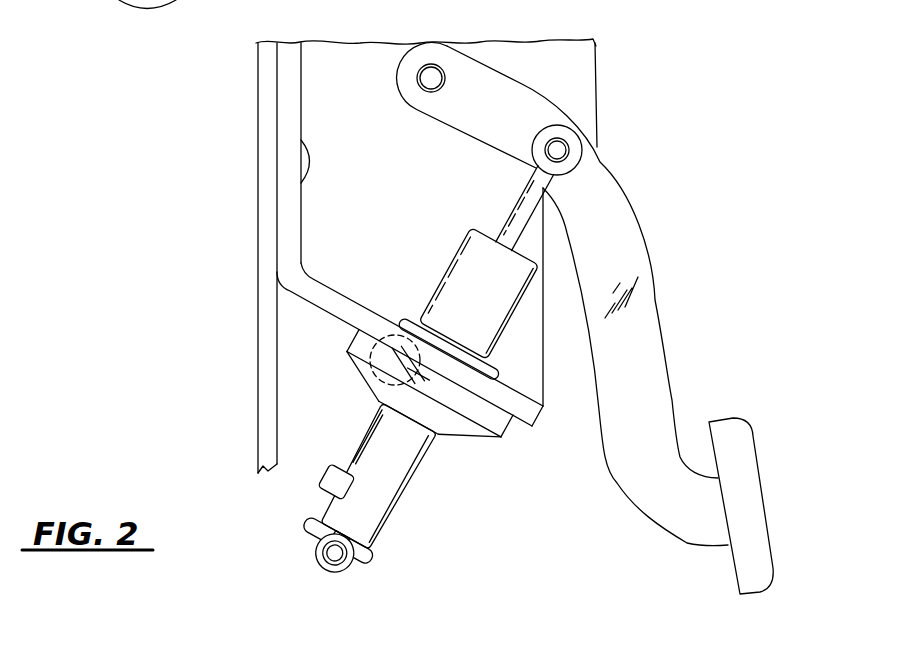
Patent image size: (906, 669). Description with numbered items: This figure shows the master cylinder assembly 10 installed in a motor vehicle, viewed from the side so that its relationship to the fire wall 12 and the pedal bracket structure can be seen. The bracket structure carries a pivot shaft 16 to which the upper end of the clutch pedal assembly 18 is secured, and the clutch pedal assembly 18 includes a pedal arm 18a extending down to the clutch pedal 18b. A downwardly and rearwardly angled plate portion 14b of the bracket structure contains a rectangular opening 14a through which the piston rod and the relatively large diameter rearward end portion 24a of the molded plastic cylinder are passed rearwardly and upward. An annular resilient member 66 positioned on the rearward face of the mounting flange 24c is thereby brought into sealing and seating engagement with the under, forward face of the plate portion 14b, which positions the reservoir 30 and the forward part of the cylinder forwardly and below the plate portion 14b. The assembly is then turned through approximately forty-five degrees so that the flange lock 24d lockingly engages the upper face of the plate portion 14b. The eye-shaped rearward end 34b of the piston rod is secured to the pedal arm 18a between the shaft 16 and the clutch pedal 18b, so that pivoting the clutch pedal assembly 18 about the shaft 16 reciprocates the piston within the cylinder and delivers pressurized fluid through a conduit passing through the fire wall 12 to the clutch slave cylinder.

The master cylinder assembly 10 is at (408, 510).
The fire wall 12 is at (258, 326).
The rectangular opening 14a is at (372, 383).
The plate portion 14b is at (332, 288).
The pivot shaft 16 is at (429, 77).
The clutch pedal assembly 18 is at (661, 336).
The pedal arm 18a is at (623, 228).
The clutch pedal 18b is at (757, 468).
The rearward end portion 24a is at (462, 260).
The mounting flange 24c is at (506, 436).
The flange lock 24d is at (500, 373).
The reservoir 30 is at (368, 460).
The rearward end 34b is at (578, 150).
The annular resilient member 66 is at (507, 433).